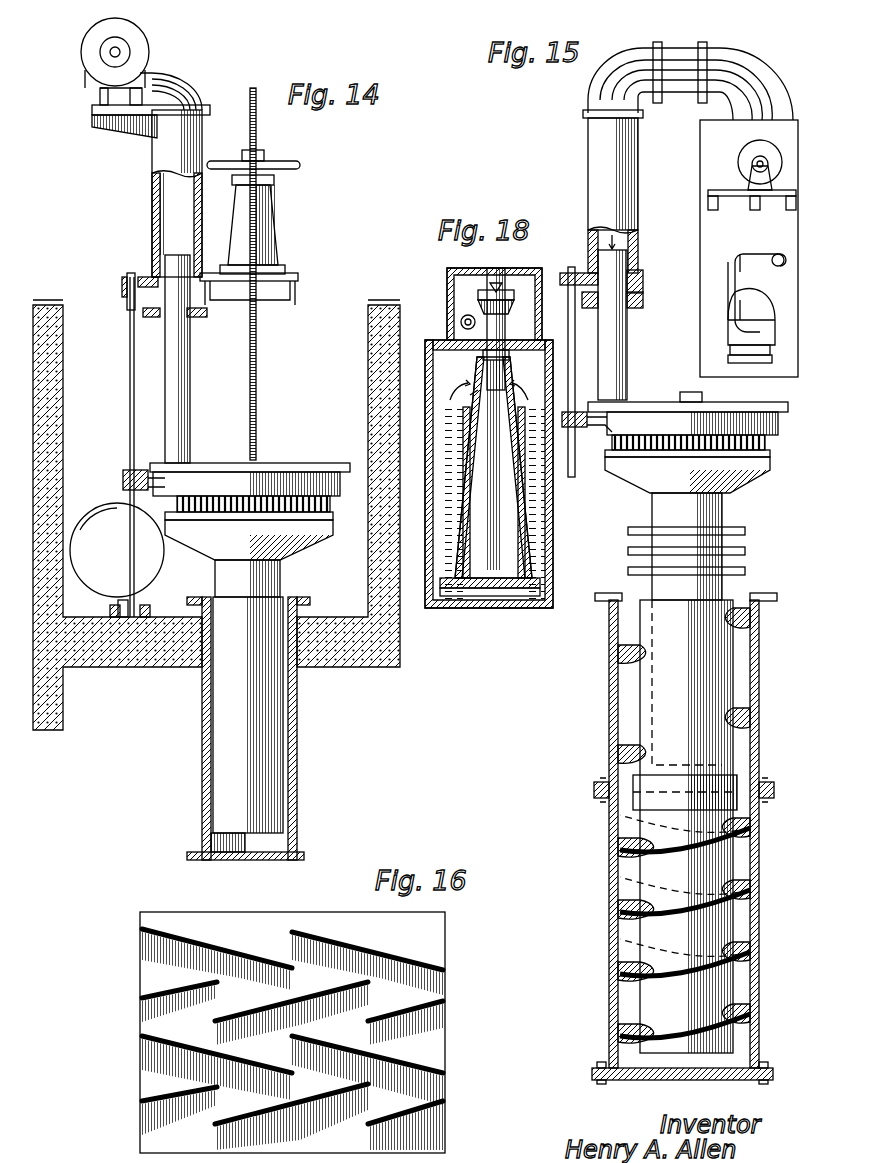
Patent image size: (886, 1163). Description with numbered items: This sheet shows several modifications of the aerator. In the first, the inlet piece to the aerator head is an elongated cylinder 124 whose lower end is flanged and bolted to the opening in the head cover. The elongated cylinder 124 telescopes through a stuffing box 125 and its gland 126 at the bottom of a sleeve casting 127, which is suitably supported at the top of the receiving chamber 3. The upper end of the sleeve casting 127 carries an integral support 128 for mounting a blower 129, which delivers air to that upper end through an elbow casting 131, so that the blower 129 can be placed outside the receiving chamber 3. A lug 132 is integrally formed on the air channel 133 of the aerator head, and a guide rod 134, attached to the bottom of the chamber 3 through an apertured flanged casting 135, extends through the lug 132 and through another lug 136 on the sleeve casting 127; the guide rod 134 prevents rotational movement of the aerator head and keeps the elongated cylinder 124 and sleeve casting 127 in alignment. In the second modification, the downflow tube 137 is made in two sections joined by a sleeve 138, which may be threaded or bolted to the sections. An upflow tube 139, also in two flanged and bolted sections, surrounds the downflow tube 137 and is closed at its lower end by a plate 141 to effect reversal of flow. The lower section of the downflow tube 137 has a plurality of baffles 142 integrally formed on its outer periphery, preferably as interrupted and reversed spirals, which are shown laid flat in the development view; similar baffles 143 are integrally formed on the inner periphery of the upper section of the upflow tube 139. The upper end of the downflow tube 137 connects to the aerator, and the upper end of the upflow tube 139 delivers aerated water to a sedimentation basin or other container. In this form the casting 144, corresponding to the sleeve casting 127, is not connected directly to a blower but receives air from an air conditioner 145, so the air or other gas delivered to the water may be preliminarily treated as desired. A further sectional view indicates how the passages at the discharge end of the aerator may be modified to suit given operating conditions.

In FIG. 14, the receiving chamber 3 is at (330, 330).
In FIG. 14, the elongated cylinder 124 is at (185, 383).
In FIG. 15, the elongated cylinder 124 is at (620, 340).
In FIG. 14, the stuffing box 125 is at (148, 276).
In FIG. 14, the gland 126 is at (195, 318).
In FIG. 14, the sleeve casting 127 is at (165, 213).
In FIG. 14, the integral support 128 is at (140, 117).
In FIG. 14, the blower 129 is at (140, 46).
In FIG. 14, the elbow casting 131 is at (178, 88).
In FIG. 14, the lug 132 is at (122, 486).
In FIG. 14, the air channel 133 is at (300, 475).
In FIG. 15, the air channel 133 is at (775, 422).
In FIG. 14, the guide rod 134 is at (130, 418).
In FIG. 14, the apertured flanged casting 135 is at (150, 612).
In FIG. 14, the lug 136 is at (125, 284).
In FIG. 15, the downflow tube 137 is at (715, 669).
In FIG. 15, the sleeve 138 is at (730, 772).
In FIG. 15, the upflow tube 139 is at (760, 849).
In FIG. 15, the plate 141 is at (628, 1077).
In FIG. 15, the baffles 142 is at (742, 882).
In FIG. 15, the baffles 143 is at (625, 750).
In FIG. 15, the casting 144 is at (625, 181).
In FIG. 15, the air conditioner 145 is at (780, 128).